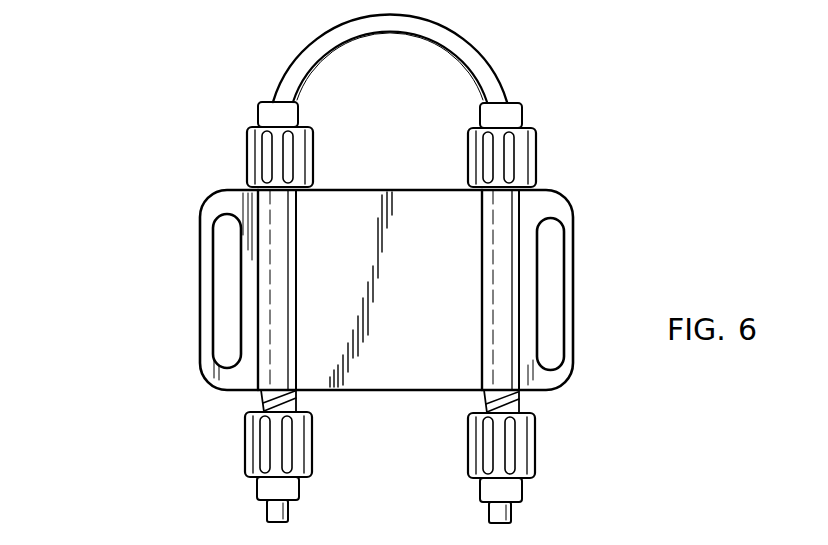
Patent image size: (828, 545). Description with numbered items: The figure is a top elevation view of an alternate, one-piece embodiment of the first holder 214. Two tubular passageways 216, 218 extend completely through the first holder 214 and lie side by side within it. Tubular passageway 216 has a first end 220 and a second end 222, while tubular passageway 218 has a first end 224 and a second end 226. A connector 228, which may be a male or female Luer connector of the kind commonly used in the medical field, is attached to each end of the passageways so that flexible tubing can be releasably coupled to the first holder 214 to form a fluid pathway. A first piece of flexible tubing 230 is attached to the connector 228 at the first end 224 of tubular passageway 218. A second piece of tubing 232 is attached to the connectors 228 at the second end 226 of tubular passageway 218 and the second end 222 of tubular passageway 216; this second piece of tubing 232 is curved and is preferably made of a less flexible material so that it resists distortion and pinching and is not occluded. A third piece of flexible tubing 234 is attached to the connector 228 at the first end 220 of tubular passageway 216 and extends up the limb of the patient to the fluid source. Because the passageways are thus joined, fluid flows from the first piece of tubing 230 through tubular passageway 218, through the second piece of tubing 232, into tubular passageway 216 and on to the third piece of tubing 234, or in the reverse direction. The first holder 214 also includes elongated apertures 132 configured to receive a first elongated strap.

The first holder 214 is at (146, 270).
The elongated apertures 132 is at (223, 302).
The tubular passageway 216 is at (265, 214).
The tubular passageway 218 is at (520, 218).
The first end 220 is at (262, 390).
The second end 222 is at (250, 190).
The first end 224 is at (520, 393).
The second end 226 is at (533, 190).
The connector 228 is at (260, 150).
The first piece of flexible tubing 230 is at (503, 513).
The second piece of tubing 232 is at (453, 38).
The third piece of flexible tubing 234 is at (268, 507).